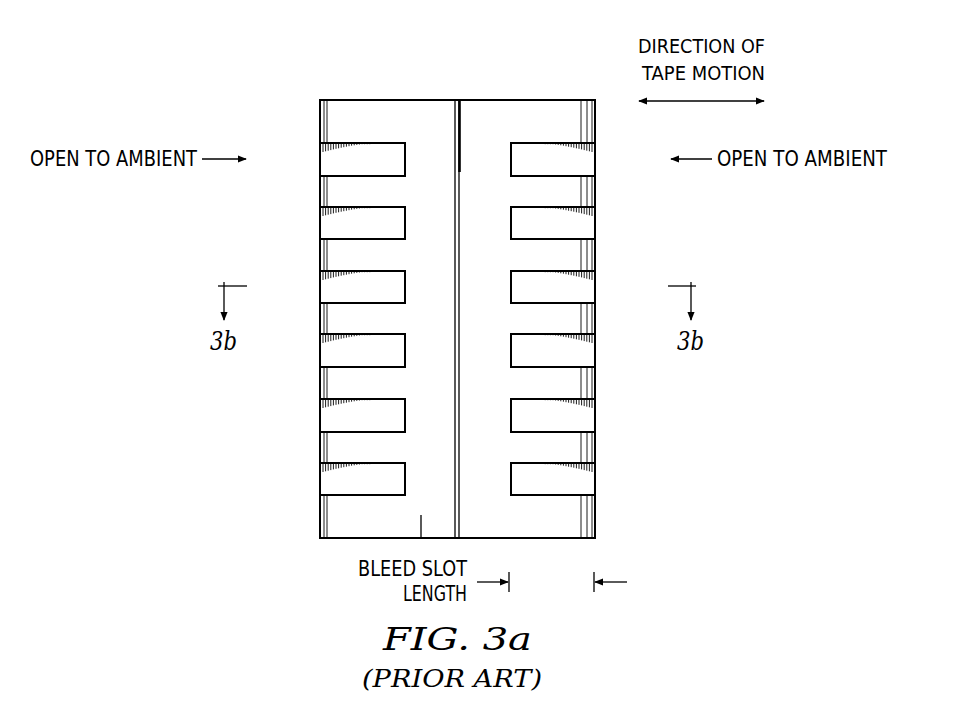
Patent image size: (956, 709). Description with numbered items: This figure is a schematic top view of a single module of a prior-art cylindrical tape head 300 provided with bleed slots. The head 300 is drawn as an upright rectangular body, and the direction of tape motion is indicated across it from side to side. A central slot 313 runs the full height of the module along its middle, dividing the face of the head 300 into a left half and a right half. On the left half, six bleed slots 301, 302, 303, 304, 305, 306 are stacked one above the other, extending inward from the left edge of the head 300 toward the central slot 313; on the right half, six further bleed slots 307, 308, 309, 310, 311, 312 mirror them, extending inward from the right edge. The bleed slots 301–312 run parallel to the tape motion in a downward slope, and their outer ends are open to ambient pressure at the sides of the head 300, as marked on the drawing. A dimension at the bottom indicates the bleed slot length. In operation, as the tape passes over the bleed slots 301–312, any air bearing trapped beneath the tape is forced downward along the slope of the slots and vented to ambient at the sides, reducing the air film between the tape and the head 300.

The head 300 is at (327, 60).
The central slot 313 is at (455, 117).
The bleed slot 301 is at (332, 164).
The bleed slot 302 is at (332, 228).
The bleed slot 303 is at (332, 292).
The bleed slot 304 is at (332, 357).
The bleed slot 305 is at (332, 422).
The bleed slot 306 is at (332, 485).
The bleed slot 307 is at (583, 164).
The bleed slot 308 is at (583, 228).
The bleed slot 309 is at (583, 292).
The bleed slot 310 is at (583, 357).
The bleed slot 311 is at (583, 422).
The bleed slot 312 is at (583, 485).